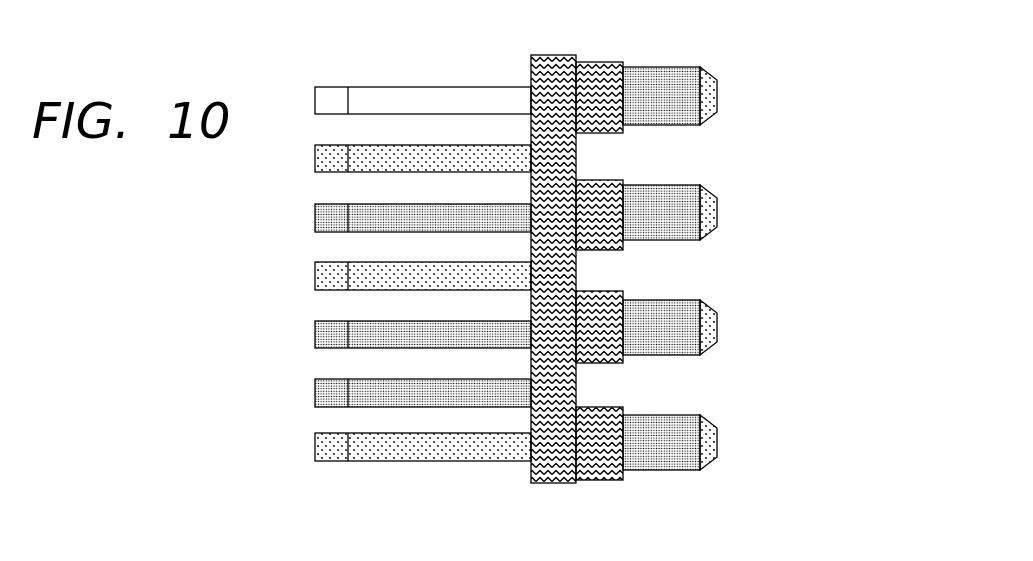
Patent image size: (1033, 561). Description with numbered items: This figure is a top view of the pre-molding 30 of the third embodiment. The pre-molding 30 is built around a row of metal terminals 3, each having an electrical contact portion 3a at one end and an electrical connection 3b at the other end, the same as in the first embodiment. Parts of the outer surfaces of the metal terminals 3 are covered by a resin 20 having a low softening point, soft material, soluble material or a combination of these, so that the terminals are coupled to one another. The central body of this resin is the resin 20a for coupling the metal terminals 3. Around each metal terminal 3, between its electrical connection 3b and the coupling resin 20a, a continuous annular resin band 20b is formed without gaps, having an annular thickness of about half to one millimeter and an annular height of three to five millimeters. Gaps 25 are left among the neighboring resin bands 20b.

The metal terminal 3 is at (381, 239).
The electrical contact portion 3a is at (668, 97).
The electrical connection 3b is at (388, 98).
The resin 20 is at (635, 273).
The resin for coupling the metal terminals 20a is at (550, 403).
The continuous annular resin band 20b is at (602, 82).
The gap 25 is at (612, 158).
The pre-molding 30 is at (316, 218).